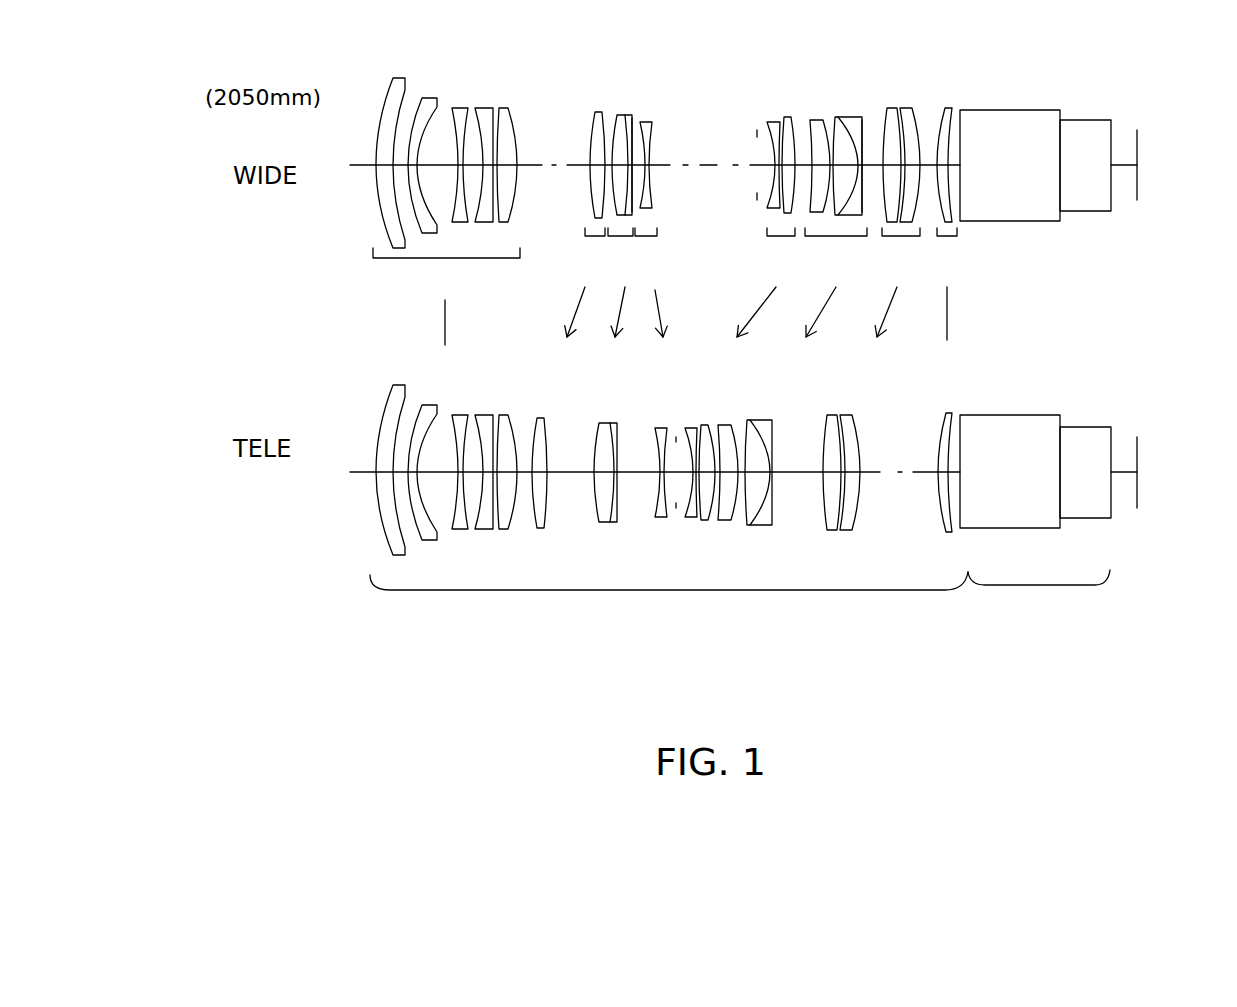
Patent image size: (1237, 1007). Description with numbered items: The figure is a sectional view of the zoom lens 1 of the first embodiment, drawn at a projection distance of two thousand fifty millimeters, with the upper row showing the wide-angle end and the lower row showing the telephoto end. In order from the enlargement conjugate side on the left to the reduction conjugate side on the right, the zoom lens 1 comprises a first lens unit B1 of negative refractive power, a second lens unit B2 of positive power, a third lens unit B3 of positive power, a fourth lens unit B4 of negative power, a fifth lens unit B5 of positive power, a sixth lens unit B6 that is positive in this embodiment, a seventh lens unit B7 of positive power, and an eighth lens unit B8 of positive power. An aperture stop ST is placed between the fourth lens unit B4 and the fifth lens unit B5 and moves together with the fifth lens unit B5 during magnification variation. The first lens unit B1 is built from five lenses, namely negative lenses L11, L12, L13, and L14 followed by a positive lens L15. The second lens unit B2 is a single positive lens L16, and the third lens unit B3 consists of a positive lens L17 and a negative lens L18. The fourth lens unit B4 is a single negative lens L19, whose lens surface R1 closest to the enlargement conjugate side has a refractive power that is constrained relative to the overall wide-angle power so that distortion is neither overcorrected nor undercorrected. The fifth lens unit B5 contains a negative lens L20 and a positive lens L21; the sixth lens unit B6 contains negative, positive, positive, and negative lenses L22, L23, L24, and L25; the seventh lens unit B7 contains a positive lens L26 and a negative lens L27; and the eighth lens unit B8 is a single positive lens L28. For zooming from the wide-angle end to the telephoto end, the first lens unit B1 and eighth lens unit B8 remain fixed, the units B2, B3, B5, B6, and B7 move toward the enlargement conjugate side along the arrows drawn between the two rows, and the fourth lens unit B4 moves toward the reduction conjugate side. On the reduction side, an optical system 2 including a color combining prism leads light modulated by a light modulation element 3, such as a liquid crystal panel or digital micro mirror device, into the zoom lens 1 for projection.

The negative lens L11 is at (400, 78).
The negative lens L12 is at (435, 98).
The negative lens L13 is at (458, 108).
The negative lens L14 is at (495, 108).
The positive lens L15 is at (506, 108).
The positive lens L16 is at (598, 112).
The positive lens L17 is at (616, 115).
The negative lens L18 is at (628, 115).
The lens surface R1 is at (636, 115).
The negative lens L19 is at (653, 122).
The negative lens L20 is at (770, 122).
The positive lens L21 is at (785, 117).
The negative lens L22 is at (813, 117).
The positive lens L23 is at (833, 117).
The positive lens L24 is at (840, 115).
The negative lens L25 is at (858, 115).
The positive lens L26 is at (893, 108).
The negative lens L27 is at (908, 108).
The positive lens L28 is at (950, 108).
The first lens unit B1 is at (460, 150).
The second lens unit B2 is at (583, 170).
The third lens unit B3 is at (634, 141).
The fourth lens unit B4 is at (675, 166).
The fifth lens unit B5 is at (773, 164).
The sixth lens unit B6 is at (844, 140).
The seventh lens unit B7 is at (929, 138).
The eighth lens unit B8 is at (967, 158).
The aperture stop ST is at (757, 200).
The zoom lens 1 is at (650, 592).
The optical system 2 is at (1027, 590).
The light modulation element 3 is at (1138, 443).